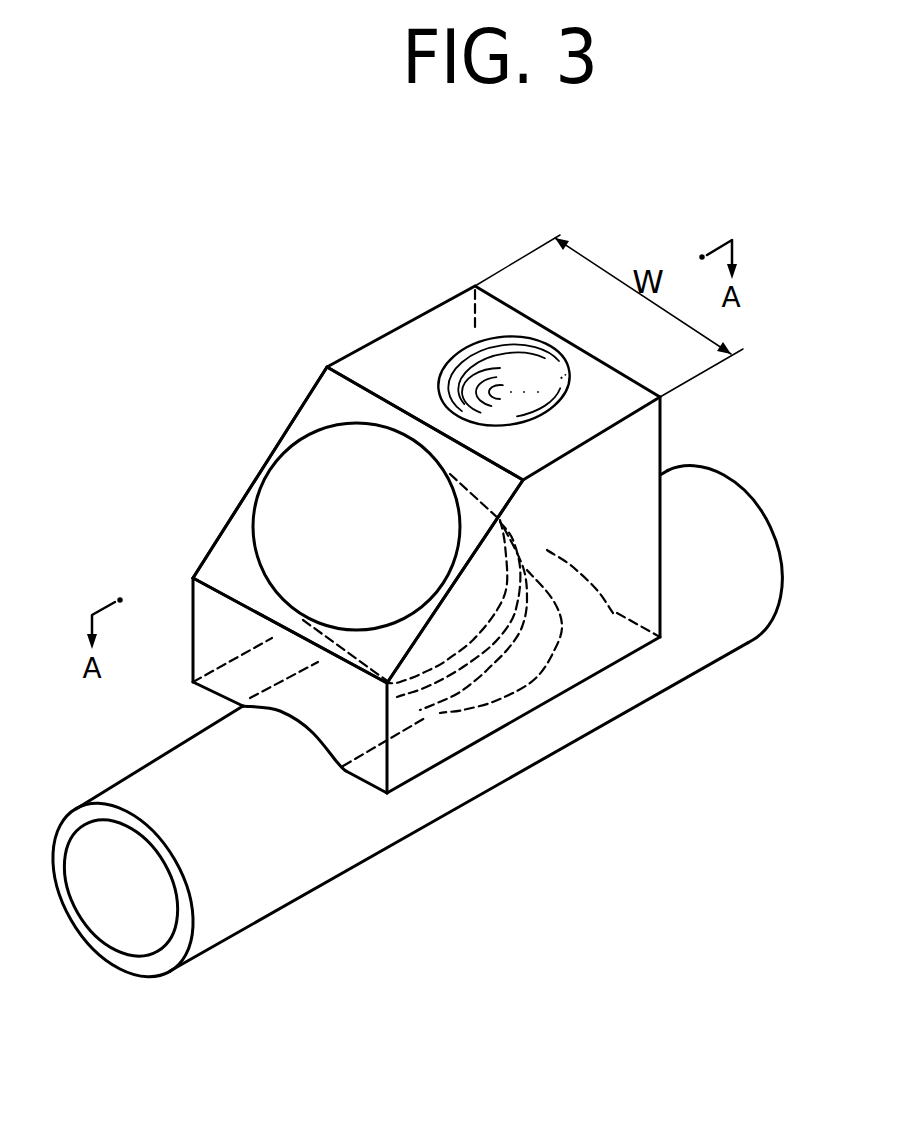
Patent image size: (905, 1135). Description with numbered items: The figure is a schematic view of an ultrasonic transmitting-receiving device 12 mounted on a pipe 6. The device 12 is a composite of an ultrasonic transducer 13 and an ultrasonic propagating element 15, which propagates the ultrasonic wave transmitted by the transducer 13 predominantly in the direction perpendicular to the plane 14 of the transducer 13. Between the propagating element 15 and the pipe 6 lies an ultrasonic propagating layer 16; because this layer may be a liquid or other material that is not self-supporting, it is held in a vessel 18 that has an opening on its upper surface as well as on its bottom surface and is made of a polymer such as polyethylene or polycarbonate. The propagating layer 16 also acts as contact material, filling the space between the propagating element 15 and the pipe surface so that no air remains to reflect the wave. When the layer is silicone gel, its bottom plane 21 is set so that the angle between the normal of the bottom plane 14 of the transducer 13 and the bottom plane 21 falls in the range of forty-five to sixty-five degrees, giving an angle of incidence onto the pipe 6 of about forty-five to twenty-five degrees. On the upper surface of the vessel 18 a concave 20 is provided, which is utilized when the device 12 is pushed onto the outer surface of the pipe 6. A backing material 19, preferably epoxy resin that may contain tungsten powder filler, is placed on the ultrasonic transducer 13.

The pipe 6 is at (315, 880).
The ultrasonic transmitting-receiving device 12 is at (478, 233).
The ultrasonic transducer 13 is at (452, 675).
The plane of the transducer 14 is at (493, 603).
The ultrasonic propagating element 15 is at (480, 663).
The ultrasonic propagating layer 16 is at (517, 677).
The vessel 18 is at (320, 401).
The backing material 19 is at (430, 647).
The concave 20 is at (475, 363).
The bottom plane of the layer 21 is at (573, 633).